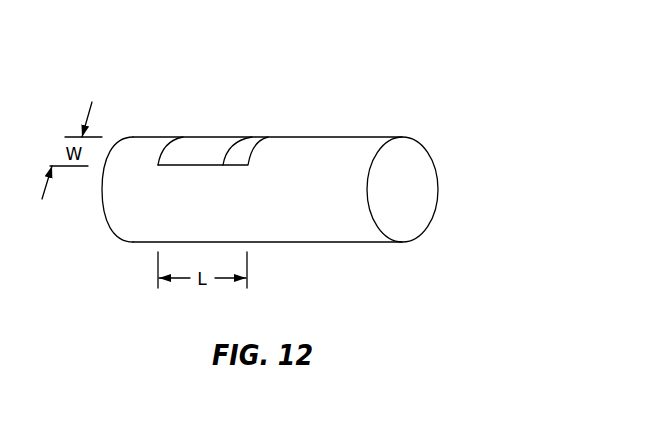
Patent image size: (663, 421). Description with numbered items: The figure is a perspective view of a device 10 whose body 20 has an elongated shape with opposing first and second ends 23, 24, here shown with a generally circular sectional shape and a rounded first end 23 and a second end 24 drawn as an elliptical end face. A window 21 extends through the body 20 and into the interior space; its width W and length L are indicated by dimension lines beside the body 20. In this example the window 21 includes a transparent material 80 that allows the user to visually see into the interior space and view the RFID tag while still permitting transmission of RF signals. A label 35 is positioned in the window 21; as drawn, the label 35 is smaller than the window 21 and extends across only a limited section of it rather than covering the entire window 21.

The device 10 is at (415, 65).
The body 20 is at (340, 217).
The window 21 is at (217, 128).
The first end 23 is at (102, 205).
The second end 24 is at (408, 175).
The label 35 is at (250, 143).
The transparent material 80 is at (197, 147).